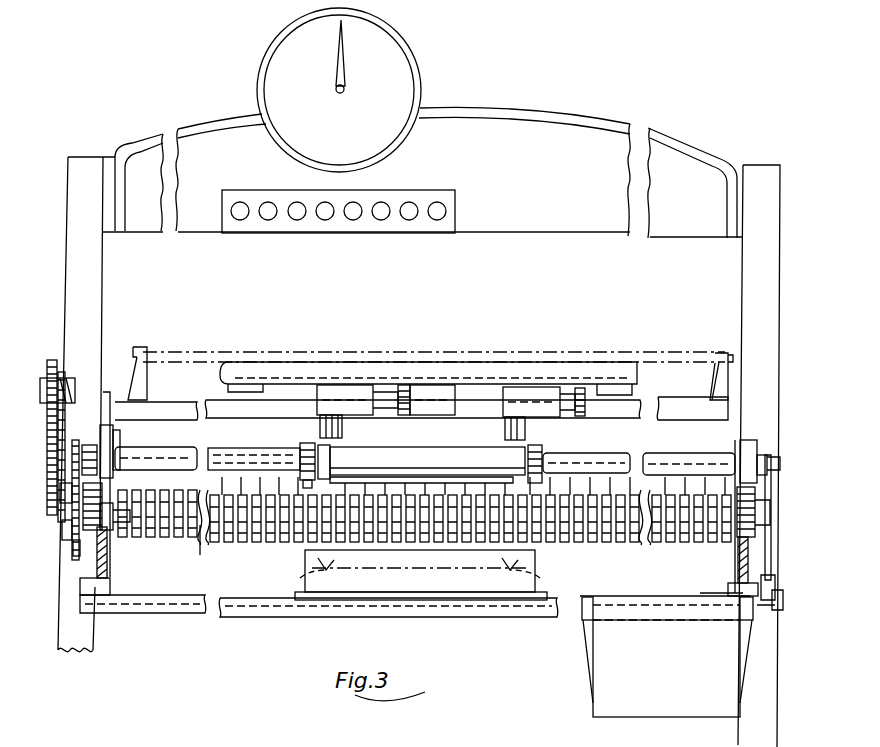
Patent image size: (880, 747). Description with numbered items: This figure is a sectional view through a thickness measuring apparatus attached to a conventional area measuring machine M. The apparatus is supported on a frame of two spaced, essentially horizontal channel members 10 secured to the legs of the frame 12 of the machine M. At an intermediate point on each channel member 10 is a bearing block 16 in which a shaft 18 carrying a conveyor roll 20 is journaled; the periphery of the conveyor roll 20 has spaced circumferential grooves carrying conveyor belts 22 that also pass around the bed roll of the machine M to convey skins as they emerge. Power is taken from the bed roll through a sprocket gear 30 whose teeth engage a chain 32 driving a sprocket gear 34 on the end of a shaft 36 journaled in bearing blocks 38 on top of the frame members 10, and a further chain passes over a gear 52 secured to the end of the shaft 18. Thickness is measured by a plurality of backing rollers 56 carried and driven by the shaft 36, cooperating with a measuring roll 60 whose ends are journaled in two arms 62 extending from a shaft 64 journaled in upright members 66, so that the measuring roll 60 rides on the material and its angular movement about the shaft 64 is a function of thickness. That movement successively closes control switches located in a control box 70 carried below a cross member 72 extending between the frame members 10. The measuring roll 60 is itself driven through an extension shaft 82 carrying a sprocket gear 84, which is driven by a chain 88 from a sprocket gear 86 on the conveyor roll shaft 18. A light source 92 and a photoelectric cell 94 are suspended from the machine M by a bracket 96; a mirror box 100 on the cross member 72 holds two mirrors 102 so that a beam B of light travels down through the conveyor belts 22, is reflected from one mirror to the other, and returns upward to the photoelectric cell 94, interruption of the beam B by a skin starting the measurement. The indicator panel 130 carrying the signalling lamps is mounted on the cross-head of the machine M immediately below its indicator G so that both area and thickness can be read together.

The channel member 10 is at (100, 585).
The frame 12 is at (88, 645).
The bearing block 16 is at (88, 535).
The shaft 18 is at (110, 530).
The conveyor roll 20 is at (215, 543).
The conveyor belts 22 is at (232, 543).
The sprocket gear 30 is at (45, 380).
The chain 32 is at (58, 360).
The sprocket gear 34 is at (65, 503).
The shaft 36 is at (213, 527).
The bearing blocks 38 is at (82, 453).
The gear 52 is at (67, 533).
The backing rollers 56 is at (522, 468).
The measuring roll 60 is at (457, 450).
The arms 62 is at (306, 448).
The shaft 64 is at (148, 455).
The upright members 66 is at (106, 437).
The control box 70 is at (666, 656).
The cross member 72 is at (226, 608).
The extension shaft 82 is at (196, 460).
The sprocket gear 84 is at (78, 447).
The sprocket gear 86 is at (73, 548).
The chain 88 is at (80, 470).
The light source 92 is at (537, 400).
The photoelectric cell 94 is at (340, 402).
The bracket 96 is at (270, 383).
The mirror box 100 is at (458, 576).
The mirrors 102 is at (310, 574).
The indicator panel 130 is at (418, 200).
The beam of light B is at (395, 570).
The indicator G is at (339, 90).
The area measuring machine M is at (490, 134).